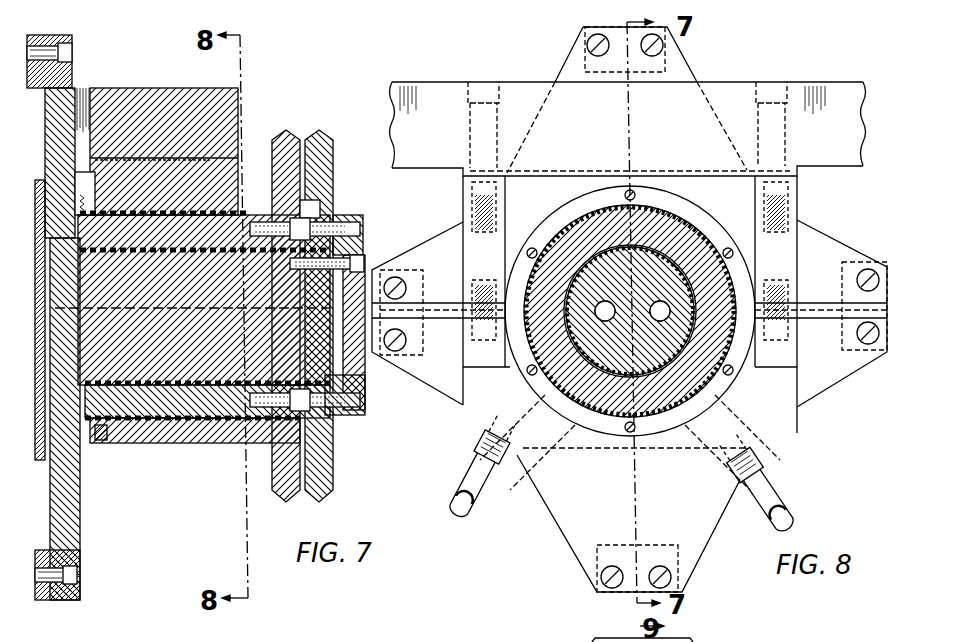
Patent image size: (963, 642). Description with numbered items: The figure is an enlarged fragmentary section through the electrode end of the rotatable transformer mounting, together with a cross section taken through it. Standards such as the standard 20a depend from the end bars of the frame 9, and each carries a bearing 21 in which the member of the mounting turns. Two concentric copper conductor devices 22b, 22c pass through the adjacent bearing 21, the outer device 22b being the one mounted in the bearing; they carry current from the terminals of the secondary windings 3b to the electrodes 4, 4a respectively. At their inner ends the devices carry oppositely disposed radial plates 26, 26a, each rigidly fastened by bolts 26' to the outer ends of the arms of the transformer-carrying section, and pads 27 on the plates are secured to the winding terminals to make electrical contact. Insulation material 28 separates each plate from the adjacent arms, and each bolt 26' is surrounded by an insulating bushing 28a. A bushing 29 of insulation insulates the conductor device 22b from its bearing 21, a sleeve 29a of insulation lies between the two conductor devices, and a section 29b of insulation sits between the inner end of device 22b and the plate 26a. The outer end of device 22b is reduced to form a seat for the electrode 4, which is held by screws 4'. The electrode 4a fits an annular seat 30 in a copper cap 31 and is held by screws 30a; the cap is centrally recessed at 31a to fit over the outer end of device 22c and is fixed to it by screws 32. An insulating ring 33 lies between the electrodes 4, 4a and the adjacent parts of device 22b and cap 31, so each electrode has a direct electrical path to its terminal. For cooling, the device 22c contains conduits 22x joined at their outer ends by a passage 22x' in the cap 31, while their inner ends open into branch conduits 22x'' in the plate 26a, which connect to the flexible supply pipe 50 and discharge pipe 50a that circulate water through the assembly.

In FIG. 7, the electrode 4 is at (286, 302).
In FIG. 7, the electrode 4a is at (318, 130).
In FIG. 7, the screws 4' is at (265, 439).
In FIG. 7, the frame 9 is at (184, 90).
In FIG. 8, the frame 9 is at (628, 134).
In FIG. 7, the standard 20a is at (250, 176).
In FIG. 8, the standard 20a is at (797, 232).
In FIG. 7, the bearing 21 is at (163, 442).
In FIG. 7, the conductor device (section of member 22) 22b is at (192, 299).
In FIG. 8, the conductor device (section of member 22) 22b is at (588, 222).
In FIG. 7, the conductor device (section of member 22) 22c is at (235, 353).
In FIG. 8, the conductor device (section of member 22) 22c is at (682, 228).
In FIG. 7, the conduits 22x is at (241, 292).
In FIG. 8, the conduits 22x is at (632, 299).
In FIG. 7, the passage 22x' is at (295, 292).
In FIG. 7, the branch conduits 22x'' is at (111, 448).
In FIG. 8, the branch conduits 22x'' is at (606, 442).
In FIG. 7, the plate 26 is at (74, 148).
In FIG. 8, the plate 26 is at (607, 304).
In FIG. 7, the bolts 26' is at (71, 58).
In FIG. 8, the bolts 26' is at (633, 414).
In FIG. 7, the plate 26a is at (80, 510).
In FIG. 8, the plate 26a is at (562, 525).
In FIG. 7, the pads 27 is at (89, 486).
In FIG. 7, the insulation material 28 is at (55, 552).
In FIG. 7, the bushing 28a is at (44, 598).
In FIG. 7, the bushing 29 is at (190, 445).
In FIG. 8, the bushing 29 is at (586, 440).
In FIG. 7, the sleeve 29a is at (235, 445).
In FIG. 8, the sleeve 29a is at (626, 443).
In FIG. 7, the section of insulation material 29b is at (170, 384).
In FIG. 7, the annular seat 30 is at (335, 232).
In FIG. 7, the screws 30a is at (340, 416).
In FIG. 7, the cap 31 is at (356, 395).
In FIG. 7, the central recess 31a is at (362, 300).
In FIG. 8, the central recess 31a is at (460, 310).
In FIG. 7, the screws 32 is at (362, 262).
In FIG. 7, the ring 33 is at (318, 212).
In FIG. 7, the secondary windings 3b is at (117, 262).
In FIG. 8, the supply pipe 50 is at (470, 510).
In FIG. 8, the discharge pipe 50a is at (788, 500).